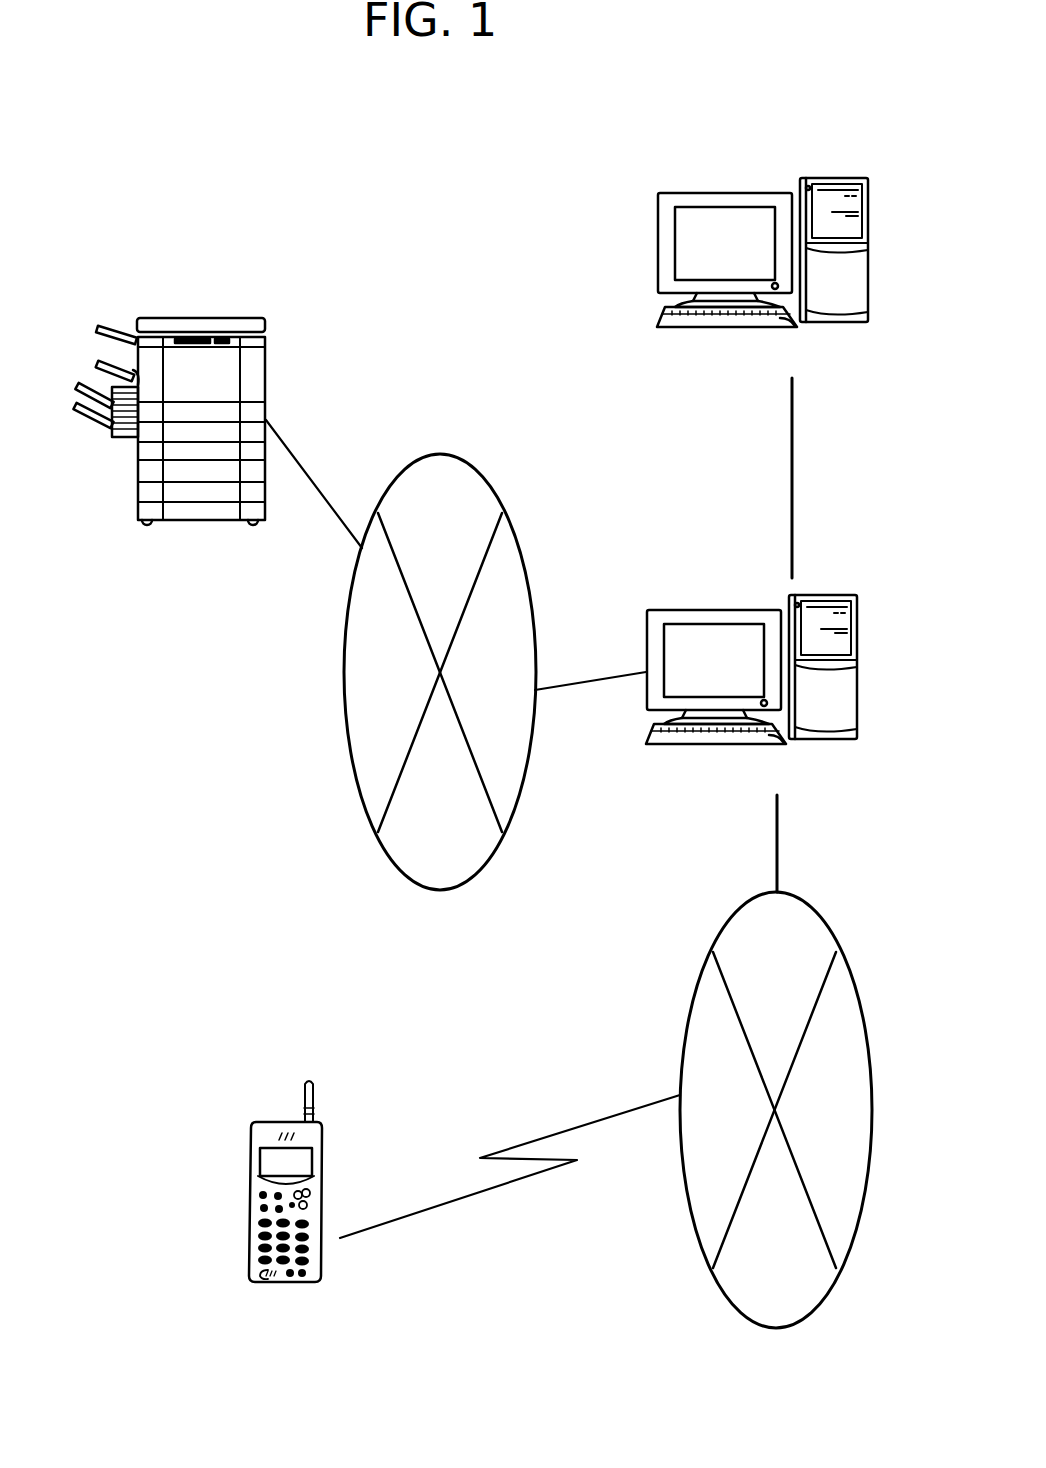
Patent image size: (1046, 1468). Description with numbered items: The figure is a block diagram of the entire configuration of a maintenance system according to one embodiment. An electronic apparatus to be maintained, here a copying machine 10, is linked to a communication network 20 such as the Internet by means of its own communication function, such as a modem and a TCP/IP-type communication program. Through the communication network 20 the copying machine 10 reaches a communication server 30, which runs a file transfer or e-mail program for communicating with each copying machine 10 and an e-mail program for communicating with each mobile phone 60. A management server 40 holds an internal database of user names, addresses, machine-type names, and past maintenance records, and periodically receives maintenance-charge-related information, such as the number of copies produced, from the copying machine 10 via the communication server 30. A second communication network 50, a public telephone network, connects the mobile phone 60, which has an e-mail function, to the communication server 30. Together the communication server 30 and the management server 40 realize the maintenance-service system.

The copying machine 10 is at (193, 318).
The communication network 20 is at (488, 478).
The communication server 30 is at (820, 600).
The management server 40 is at (815, 178).
The communication network 50 is at (830, 925).
The mobile phone 60 is at (272, 1130).